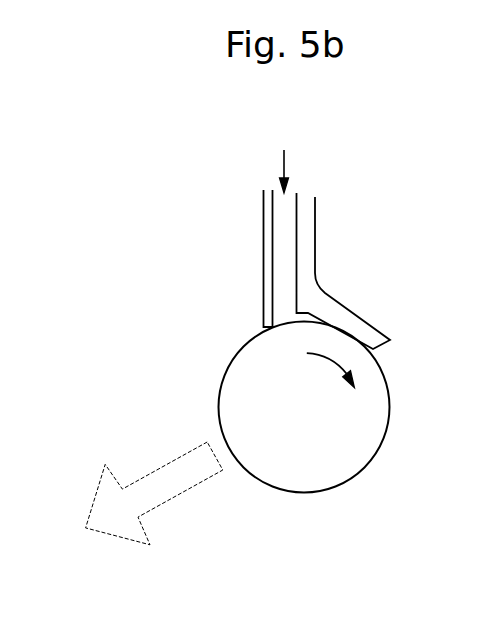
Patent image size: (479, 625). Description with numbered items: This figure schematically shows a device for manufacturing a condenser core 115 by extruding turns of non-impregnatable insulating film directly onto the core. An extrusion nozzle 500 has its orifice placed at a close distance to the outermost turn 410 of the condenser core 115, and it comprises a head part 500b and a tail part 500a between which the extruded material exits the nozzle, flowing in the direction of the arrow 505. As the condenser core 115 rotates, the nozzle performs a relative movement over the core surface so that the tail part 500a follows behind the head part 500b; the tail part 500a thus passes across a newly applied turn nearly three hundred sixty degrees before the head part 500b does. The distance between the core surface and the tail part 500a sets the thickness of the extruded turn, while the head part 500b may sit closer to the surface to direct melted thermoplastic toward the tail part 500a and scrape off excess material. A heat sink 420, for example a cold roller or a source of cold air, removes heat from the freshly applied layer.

The arrow 505 is at (290, 163).
The extrusion nozzle 500 is at (307, 269).
The head part 500b is at (253, 307).
The tail part 500a is at (381, 320).
The outermost turn 410 is at (390, 415).
The condenser core 115 is at (353, 452).
The heat sink 420 is at (177, 459).